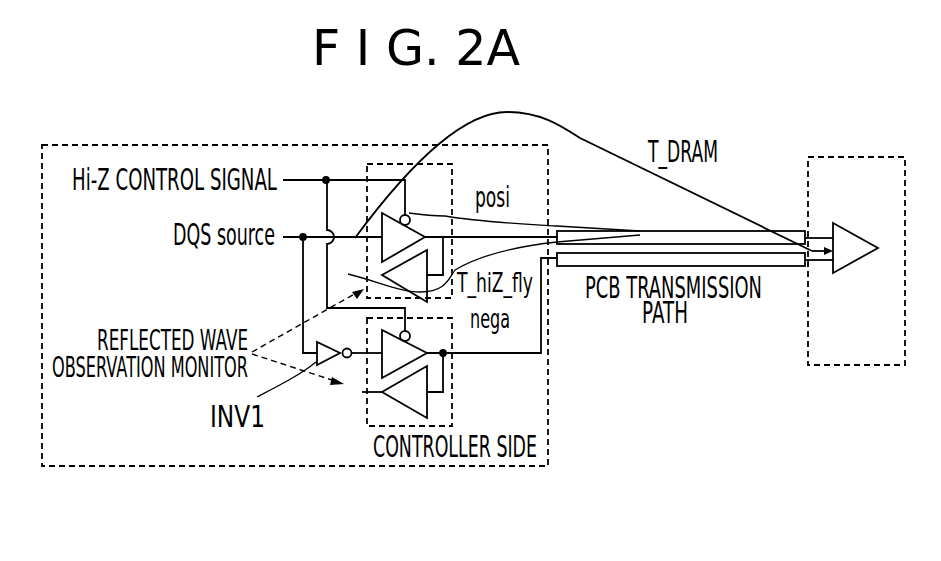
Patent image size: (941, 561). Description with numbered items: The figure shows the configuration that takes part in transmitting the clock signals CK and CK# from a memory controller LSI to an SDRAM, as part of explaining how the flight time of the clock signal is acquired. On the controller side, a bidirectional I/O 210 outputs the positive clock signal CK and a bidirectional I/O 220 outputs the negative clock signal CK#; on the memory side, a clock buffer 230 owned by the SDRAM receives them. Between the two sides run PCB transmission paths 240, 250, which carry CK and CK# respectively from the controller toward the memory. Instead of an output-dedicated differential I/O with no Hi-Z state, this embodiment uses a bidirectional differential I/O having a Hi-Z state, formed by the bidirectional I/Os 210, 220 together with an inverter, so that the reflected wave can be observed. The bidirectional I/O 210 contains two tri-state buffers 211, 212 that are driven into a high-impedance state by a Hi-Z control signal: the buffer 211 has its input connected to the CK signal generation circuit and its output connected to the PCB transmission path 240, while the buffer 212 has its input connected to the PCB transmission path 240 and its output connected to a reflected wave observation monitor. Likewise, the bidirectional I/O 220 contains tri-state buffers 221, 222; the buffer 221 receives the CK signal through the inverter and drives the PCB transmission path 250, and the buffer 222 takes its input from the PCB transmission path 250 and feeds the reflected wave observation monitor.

The bidirectional I/O 210 is at (397, 164).
The buffer 211 is at (445, 216).
The buffer 212 is at (382, 275).
The bidirectional I/O 220 is at (453, 374).
The buffer 221 is at (382, 368).
The buffer 222 is at (427, 407).
The clock buffer 230 is at (852, 223).
The PCB transmission path 240 is at (768, 231).
The PCB transmission path 250 is at (775, 267).